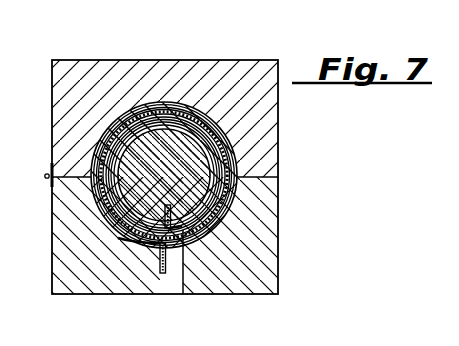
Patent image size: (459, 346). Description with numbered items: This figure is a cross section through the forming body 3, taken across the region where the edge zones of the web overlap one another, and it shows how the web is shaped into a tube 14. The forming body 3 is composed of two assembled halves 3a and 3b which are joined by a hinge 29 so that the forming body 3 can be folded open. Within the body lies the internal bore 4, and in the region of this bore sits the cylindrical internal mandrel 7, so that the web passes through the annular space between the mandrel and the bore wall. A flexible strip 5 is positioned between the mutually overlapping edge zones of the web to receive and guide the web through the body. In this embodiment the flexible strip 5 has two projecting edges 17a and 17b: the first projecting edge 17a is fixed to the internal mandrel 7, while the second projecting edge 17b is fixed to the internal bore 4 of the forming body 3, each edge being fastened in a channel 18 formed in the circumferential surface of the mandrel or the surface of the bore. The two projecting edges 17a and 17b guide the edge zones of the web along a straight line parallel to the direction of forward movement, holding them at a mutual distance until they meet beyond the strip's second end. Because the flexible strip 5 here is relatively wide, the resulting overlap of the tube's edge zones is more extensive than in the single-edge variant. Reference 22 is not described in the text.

The forming body 3 is at (152, 56).
The body half 3a is at (249, 74).
The body half 3b is at (268, 239).
The internal bore 4 is at (237, 199).
The flexible strip 5 is at (131, 230).
The internal mandrel 7 is at (201, 160).
The tube 14 is at (190, 107).
The projecting edge 17a is at (121, 244).
The projecting edge 17b is at (163, 246).
The channel 18 is at (150, 254).
The terminal pin 22 is at (158, 265).
The hinge 29 is at (45, 176).